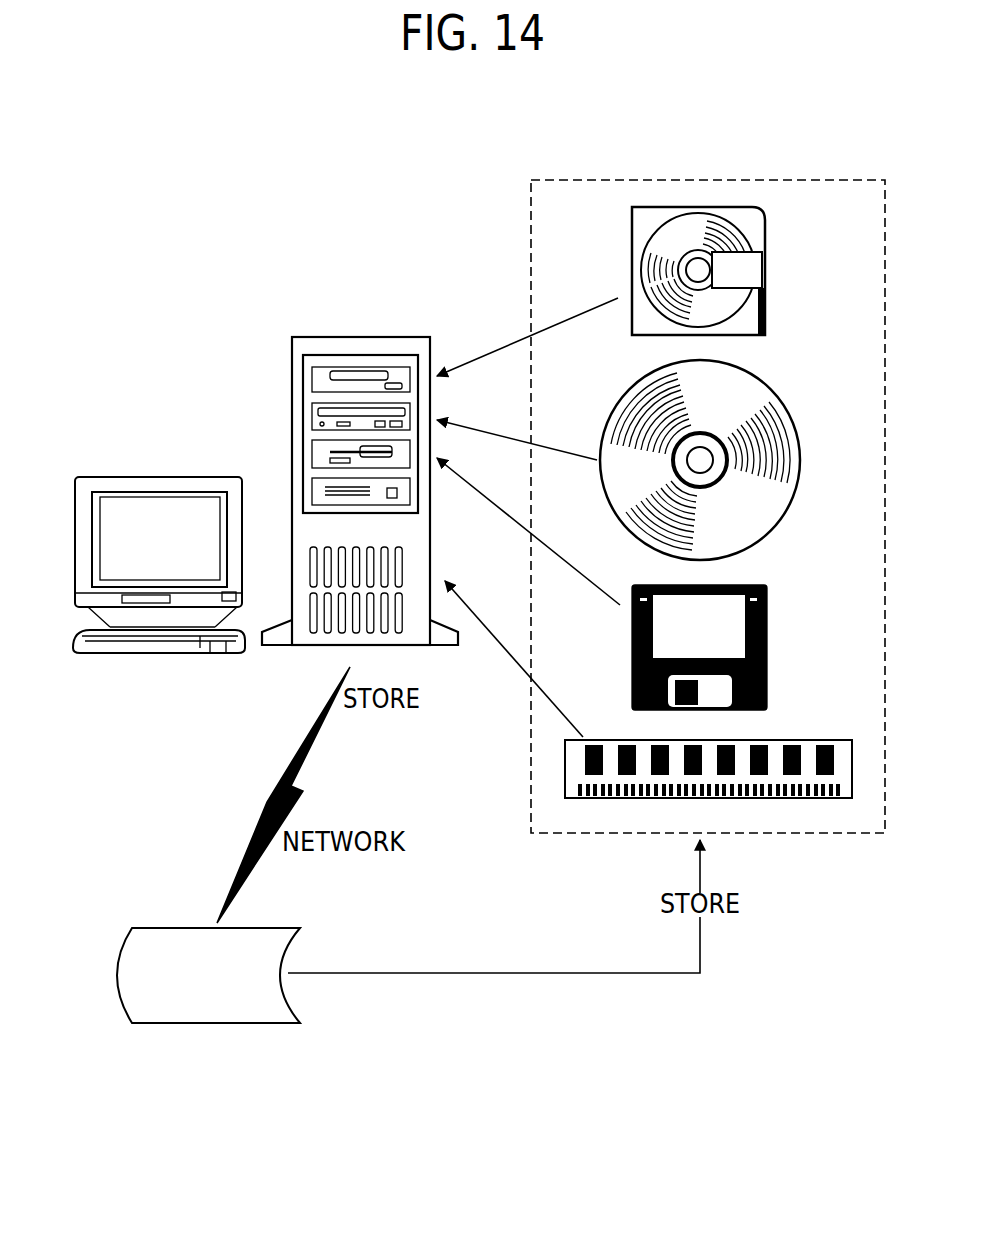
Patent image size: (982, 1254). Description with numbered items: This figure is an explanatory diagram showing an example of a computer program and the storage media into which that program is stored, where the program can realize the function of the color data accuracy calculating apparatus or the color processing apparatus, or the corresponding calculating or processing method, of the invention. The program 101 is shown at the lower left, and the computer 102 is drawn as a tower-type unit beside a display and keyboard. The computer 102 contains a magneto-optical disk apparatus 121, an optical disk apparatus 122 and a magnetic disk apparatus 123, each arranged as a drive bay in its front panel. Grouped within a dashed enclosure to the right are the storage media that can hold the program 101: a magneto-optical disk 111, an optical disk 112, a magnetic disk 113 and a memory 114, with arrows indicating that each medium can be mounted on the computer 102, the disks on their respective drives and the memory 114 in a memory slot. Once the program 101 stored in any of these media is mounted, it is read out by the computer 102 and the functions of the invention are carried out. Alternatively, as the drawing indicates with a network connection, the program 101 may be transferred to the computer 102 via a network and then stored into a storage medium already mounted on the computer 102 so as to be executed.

The program 101 is at (217, 1023).
The computer 102 is at (336, 454).
The magneto-optical disk 111 is at (765, 233).
The optical disk 112 is at (777, 402).
The magnetic disk 113 is at (767, 623).
The memory 114 is at (837, 740).
The magneto-optical disk apparatus 121 is at (312, 381).
The optical disk apparatus 122 is at (312, 419).
The magnetic disk apparatus 123 is at (312, 457).